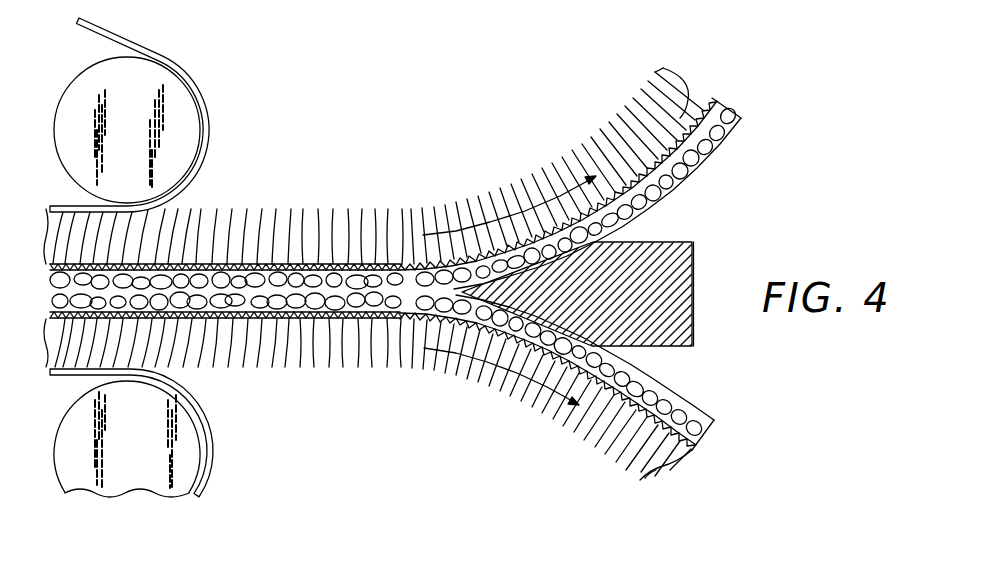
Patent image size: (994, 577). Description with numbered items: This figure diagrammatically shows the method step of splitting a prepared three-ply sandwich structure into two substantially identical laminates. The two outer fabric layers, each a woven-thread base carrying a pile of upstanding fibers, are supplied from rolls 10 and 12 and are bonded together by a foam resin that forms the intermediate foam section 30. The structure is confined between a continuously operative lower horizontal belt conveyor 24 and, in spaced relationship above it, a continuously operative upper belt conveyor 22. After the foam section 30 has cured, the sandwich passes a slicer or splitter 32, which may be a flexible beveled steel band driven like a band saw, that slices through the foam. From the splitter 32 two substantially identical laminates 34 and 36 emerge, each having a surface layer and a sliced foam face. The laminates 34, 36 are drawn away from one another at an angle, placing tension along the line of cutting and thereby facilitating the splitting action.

The roll 10 is at (373, 355).
The roll 12 is at (378, 230).
The upper belt conveyor 22 is at (208, 120).
The lower horizontal belt conveyor 24 is at (210, 430).
The foam section 30 is at (275, 277).
The slicer or splitter 32 is at (668, 268).
The laminate 34 is at (690, 90).
The laminate 36 is at (640, 430).